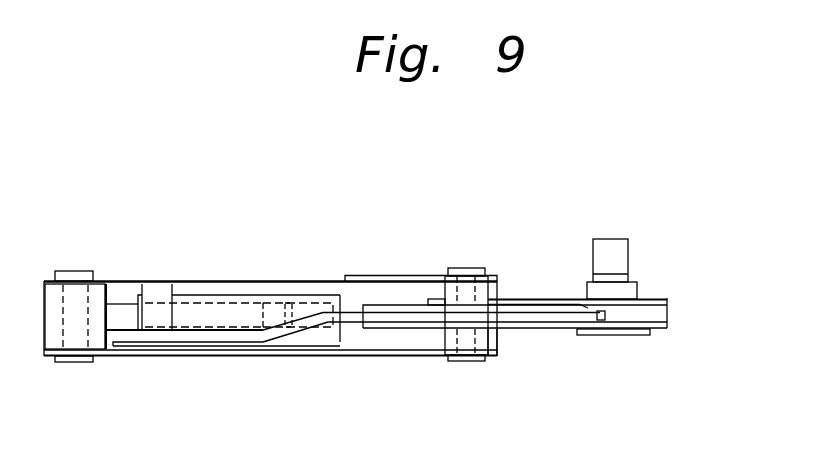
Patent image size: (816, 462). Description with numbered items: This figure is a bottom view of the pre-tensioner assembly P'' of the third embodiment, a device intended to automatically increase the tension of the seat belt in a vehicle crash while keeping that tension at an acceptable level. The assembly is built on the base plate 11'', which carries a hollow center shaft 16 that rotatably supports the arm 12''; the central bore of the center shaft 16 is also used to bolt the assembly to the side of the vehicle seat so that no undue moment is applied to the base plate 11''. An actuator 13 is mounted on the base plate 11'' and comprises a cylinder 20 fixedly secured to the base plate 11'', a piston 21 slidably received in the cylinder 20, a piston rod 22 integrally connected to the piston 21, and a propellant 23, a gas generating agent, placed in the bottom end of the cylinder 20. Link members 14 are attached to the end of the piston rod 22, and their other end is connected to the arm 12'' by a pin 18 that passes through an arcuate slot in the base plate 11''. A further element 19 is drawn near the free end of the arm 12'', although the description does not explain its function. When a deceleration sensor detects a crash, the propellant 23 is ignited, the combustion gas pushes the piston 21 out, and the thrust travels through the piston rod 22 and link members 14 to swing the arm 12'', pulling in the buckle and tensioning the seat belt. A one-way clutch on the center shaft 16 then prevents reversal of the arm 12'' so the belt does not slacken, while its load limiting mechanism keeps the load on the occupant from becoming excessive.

The base plate 11'' is at (465, 266).
The arm 12'' is at (515, 355).
The actuator 13 is at (218, 320).
The link members 14 is at (150, 357).
The center shaft 16 is at (503, 338).
The pin 18 is at (457, 332).
The block 19 is at (638, 289).
The cylinder 20 is at (213, 288).
The piston 21 is at (273, 300).
The piston rod 22 is at (117, 310).
The propellant 23 is at (310, 300).
The pre-tensioner assembly P'' is at (503, 206).